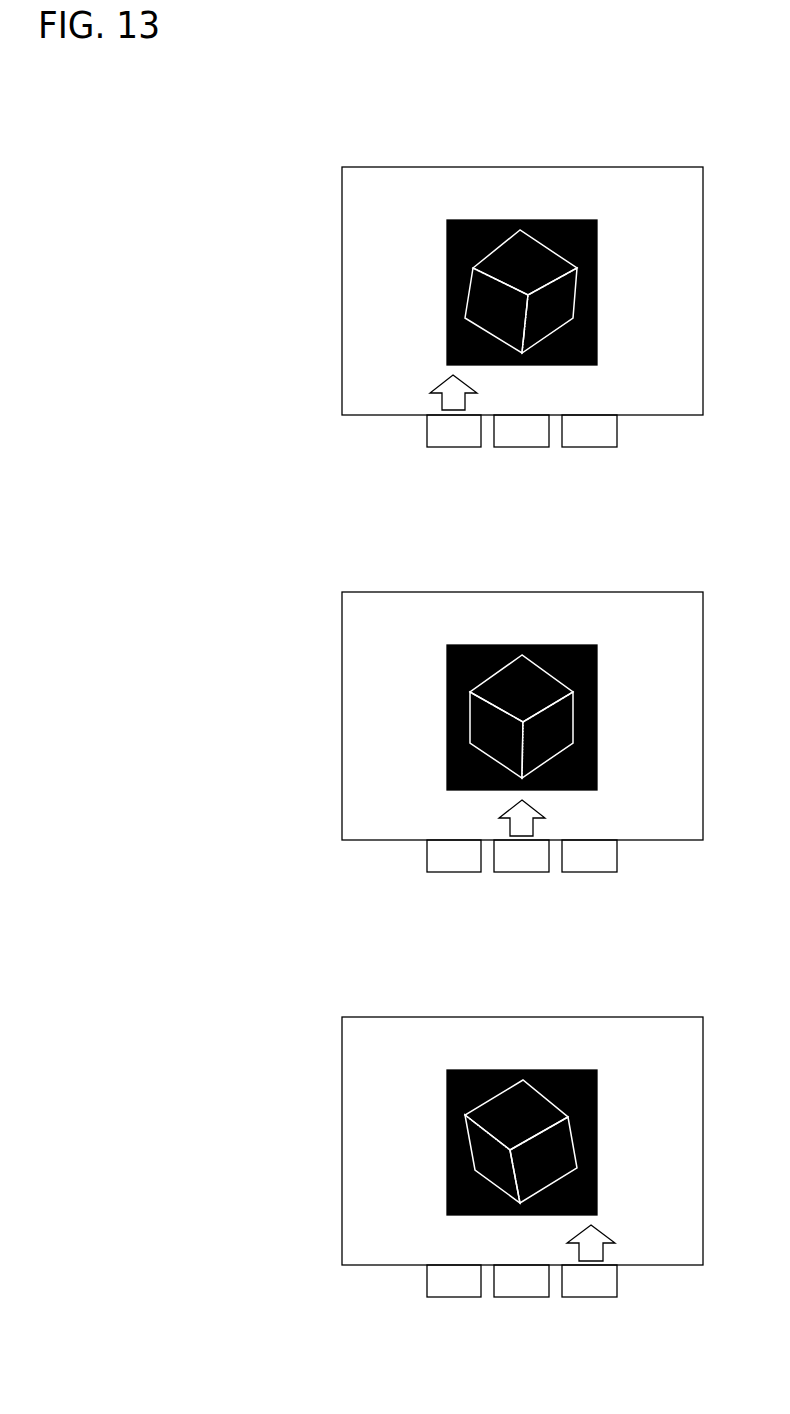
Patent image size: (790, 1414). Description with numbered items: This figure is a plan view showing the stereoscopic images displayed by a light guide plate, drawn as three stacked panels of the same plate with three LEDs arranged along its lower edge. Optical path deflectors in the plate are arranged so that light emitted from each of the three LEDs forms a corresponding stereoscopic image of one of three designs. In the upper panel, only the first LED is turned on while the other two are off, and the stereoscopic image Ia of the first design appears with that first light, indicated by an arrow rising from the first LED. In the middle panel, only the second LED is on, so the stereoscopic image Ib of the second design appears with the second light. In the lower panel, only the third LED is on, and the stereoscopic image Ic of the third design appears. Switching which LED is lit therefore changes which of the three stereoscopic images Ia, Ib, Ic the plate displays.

The stereoscopic image of design A Ia is at (560, 220).
The stereoscopic image of design B Ib is at (560, 645).
The stereoscopic image of design C Ic is at (560, 1070).